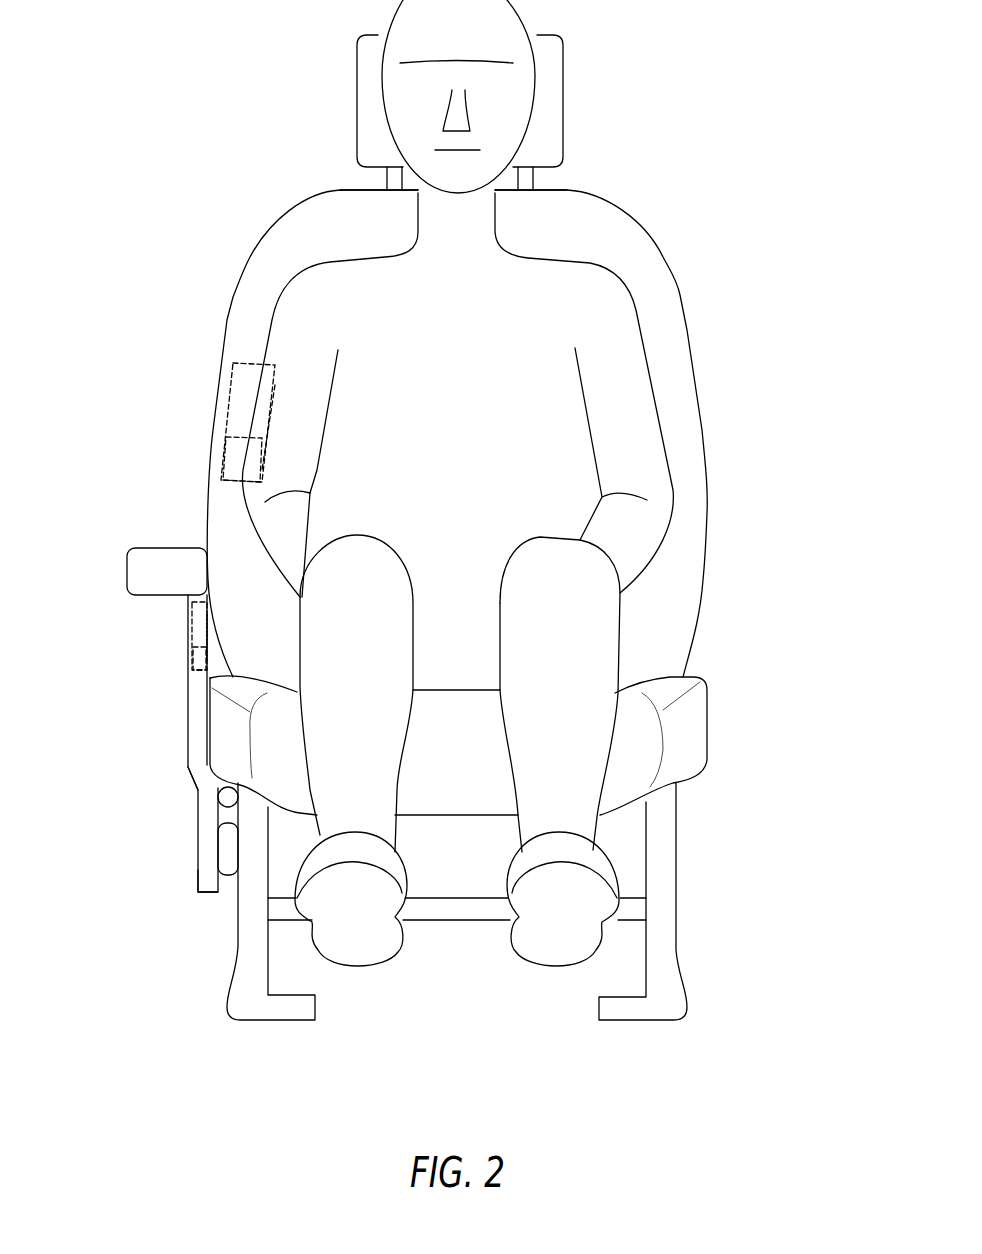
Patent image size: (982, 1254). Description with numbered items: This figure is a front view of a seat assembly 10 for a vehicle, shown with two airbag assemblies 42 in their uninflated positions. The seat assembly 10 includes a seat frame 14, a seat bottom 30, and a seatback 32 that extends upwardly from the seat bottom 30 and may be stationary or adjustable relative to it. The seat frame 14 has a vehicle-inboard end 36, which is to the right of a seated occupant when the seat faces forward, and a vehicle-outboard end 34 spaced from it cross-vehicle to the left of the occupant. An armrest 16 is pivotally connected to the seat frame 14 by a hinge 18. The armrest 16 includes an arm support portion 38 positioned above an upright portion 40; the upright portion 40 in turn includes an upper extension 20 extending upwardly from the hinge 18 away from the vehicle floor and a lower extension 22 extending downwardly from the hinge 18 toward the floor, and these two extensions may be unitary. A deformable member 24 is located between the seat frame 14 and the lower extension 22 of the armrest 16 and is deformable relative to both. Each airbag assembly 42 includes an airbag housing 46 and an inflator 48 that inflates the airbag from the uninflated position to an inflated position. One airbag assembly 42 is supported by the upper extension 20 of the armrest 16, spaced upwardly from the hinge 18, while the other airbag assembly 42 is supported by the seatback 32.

The seat assembly 10 is at (694, 104).
The seat frame 14 is at (450, 913).
The armrest 16 is at (156, 710).
The hinge 18 is at (222, 810).
The upper extension 20 is at (186, 717).
The lower extension 22 is at (195, 873).
The deformable member 24 is at (228, 876).
The seat bottom 30 is at (693, 735).
The seatback 32 is at (680, 330).
The vehicle-outboard end 34 is at (677, 898).
The vehicle-inboard end 36 is at (237, 950).
The arm support portion 38 is at (180, 546).
The upright portion 40 is at (195, 772).
The airbag assembly 42 is at (243, 357).
The airbag housing 46 is at (275, 385).
The inflator 48 is at (225, 453).